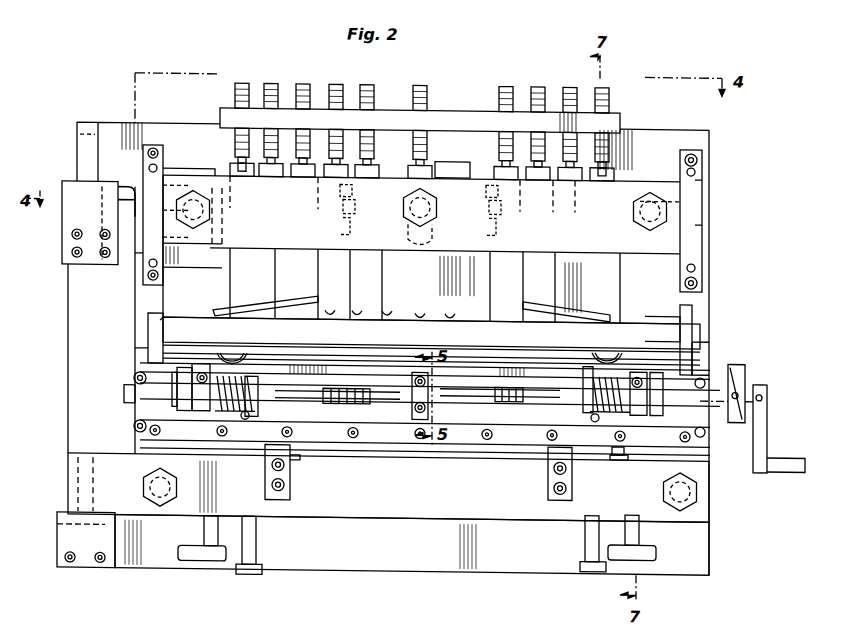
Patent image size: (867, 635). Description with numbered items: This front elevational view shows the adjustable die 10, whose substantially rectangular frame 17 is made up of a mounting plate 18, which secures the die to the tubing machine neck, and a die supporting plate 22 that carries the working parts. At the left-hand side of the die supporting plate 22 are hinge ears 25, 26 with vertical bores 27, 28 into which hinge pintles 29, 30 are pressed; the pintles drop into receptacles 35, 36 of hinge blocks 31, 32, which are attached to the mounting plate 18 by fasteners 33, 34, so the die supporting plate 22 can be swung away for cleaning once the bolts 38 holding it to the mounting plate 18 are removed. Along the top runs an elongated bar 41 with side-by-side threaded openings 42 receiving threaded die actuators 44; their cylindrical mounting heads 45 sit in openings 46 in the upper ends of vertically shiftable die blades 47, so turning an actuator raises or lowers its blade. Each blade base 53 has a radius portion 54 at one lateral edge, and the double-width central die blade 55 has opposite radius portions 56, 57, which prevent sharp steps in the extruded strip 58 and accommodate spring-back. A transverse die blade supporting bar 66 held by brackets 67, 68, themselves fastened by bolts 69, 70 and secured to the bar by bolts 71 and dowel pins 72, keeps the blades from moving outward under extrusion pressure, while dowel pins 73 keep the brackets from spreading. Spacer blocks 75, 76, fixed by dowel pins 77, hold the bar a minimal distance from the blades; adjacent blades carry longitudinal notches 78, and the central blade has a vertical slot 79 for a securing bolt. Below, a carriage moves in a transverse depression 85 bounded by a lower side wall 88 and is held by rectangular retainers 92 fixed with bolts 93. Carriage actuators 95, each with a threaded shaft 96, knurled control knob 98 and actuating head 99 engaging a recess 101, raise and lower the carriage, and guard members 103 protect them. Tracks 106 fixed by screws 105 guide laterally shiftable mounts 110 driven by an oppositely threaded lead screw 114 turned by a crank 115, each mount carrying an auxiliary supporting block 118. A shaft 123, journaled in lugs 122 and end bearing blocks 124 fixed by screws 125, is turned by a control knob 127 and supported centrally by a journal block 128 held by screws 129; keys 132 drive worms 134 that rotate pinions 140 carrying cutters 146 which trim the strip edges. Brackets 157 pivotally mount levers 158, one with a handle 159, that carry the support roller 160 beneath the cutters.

The adjustable die 10 is at (448, 84).
The frame 17 is at (640, 115).
The mounting plate 18 is at (342, 568).
The die supporting plate 22 is at (680, 121).
The hinge ear 25 is at (79, 124).
The hinge ear 26 is at (68, 458).
The vertical bore 27 is at (80, 135).
The vertical bore 28 is at (78, 498).
The hinge pintle 29 is at (85, 158).
The hinge pintle 30 is at (78, 478).
The hinge block 31 is at (70, 235).
The hinge block 32 is at (57, 550).
The fasteners 33 is at (70, 253).
The fasteners 34 is at (100, 565).
The receptacle 35 is at (62, 190).
The receptacle 36 is at (57, 533).
The bolts 38 is at (697, 485).
The elongated bar 41 is at (320, 110).
The threaded openings 42 is at (606, 112).
The die actuators 44 is at (421, 82).
The mounting heads 45 is at (602, 172).
The openings 46 is at (580, 172).
The die blades 47 is at (380, 172).
The base 53 is at (332, 306).
The radius portion 54 is at (359, 306).
The central die blade 55 is at (437, 170).
The radius portion 56 is at (389, 306).
The radius portion 57 is at (450, 308).
The strip 58 is at (420, 308).
The die blade supporting bar 66 is at (212, 253).
The bracket 67 is at (147, 253).
The bracket 68 is at (705, 248).
The bolts 69 is at (153, 282).
The bolts 70 is at (698, 278).
The bolts 71 is at (710, 207).
The dowel pins 72 is at (705, 221).
The dowel pins 73 is at (698, 261).
The spacer block 75 is at (340, 207).
The spacer block 76 is at (486, 206).
The dowel pins 77 is at (478, 186).
The longitudinal notches 78 is at (500, 224).
The vertical slot 79 is at (420, 244).
The transverse depression 85 is at (438, 449).
The lower side wall 88 is at (525, 449).
The rectangular retainers 92 is at (262, 483).
The bolts 93 is at (292, 462).
The carriage actuators 95 is at (652, 556).
The threaded shaft 96 is at (640, 529).
The knurled control knob 98 is at (660, 551).
The actuating head 99 is at (616, 450).
The recess 101 is at (625, 454).
The guard members 103 is at (582, 566).
The screws 105 is at (488, 436).
The tracks 106 is at (393, 442).
The mounts 110 is at (577, 409).
The lead screw 114 is at (368, 401).
The crank 115 is at (768, 400).
The auxiliary supporting block 118 is at (184, 366).
The lugs 122 is at (580, 368).
The shaft 123 is at (328, 401).
The bearing blocks 124 is at (712, 420).
The screws 125 is at (708, 435).
The control knob 127 is at (746, 362).
The journal block 128 is at (432, 377).
The screws 129 is at (426, 404).
The keys 132 is at (287, 398).
The worm 134 is at (636, 368).
The pinion 140 is at (608, 347).
The cutter 146 is at (548, 300).
The brackets 157 is at (705, 350).
The lever 158 is at (705, 324).
The handle 159 is at (680, 297).
The support roller 160 is at (660, 312).